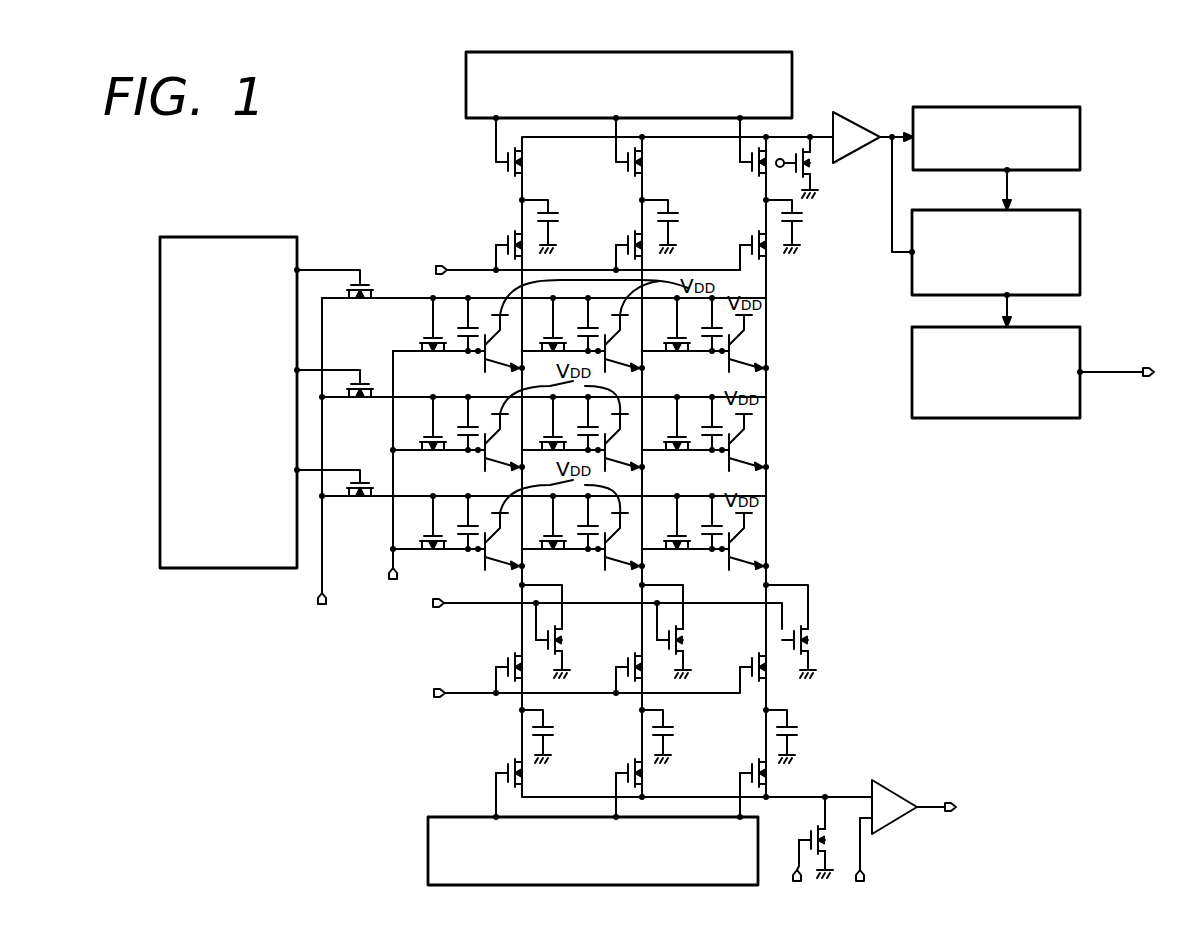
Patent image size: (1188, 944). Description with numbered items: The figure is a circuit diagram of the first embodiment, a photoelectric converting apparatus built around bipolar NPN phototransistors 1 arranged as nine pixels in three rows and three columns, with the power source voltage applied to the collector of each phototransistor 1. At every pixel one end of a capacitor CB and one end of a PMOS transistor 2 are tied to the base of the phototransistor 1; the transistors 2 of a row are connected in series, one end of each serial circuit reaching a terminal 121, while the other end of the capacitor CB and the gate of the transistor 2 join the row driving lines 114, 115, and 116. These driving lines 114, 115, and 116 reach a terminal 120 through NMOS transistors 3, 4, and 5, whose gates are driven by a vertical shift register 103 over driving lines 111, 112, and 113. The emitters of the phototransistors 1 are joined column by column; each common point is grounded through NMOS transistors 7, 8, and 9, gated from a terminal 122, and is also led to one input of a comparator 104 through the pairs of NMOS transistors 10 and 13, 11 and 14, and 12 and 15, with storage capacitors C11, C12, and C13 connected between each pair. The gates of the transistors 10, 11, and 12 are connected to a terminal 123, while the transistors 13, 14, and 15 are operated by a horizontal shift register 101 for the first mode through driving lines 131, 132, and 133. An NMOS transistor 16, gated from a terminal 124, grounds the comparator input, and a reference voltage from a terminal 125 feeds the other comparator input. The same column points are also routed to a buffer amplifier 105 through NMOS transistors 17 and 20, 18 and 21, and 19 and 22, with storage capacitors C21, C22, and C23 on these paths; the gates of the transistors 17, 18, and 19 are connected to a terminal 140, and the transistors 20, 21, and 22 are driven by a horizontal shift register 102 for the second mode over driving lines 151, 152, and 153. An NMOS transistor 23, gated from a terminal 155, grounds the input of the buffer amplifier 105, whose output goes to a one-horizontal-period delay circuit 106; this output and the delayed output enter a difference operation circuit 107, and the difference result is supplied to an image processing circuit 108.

The phototransistor 1 is at (768, 352).
The PMOS transistor 2 is at (428, 334).
The NMOS transistor 3 is at (363, 285).
The NMOS transistor 4 is at (366, 384).
The NMOS transistor 5 is at (364, 483).
The NMOS transistor 7 is at (560, 637).
The NMOS transistor 8 is at (683, 637).
The NMOS transistor 9 is at (806, 637).
The NMOS transistor 10 is at (506, 662).
The NMOS transistor 11 is at (627, 667).
The NMOS transistor 12 is at (750, 667).
The NMOS transistor 13 is at (506, 768).
The NMOS transistor 14 is at (628, 772).
The NMOS transistor 15 is at (748, 772).
The NMOS transistor 16 is at (812, 840).
The NMOS transistor 17 is at (508, 243).
The NMOS transistor 18 is at (628, 242).
The NMOS transistor 19 is at (752, 242).
The NMOS transistor 20 is at (508, 170).
The NMOS transistor 21 is at (628, 170).
The NMOS transistor 22 is at (752, 170).
The NMOS transistor 23 is at (794, 152).
The horizontal shift register 101 is at (428, 830).
The horizontal shift register 102 is at (466, 78).
The vertical shift register 103 is at (272, 237).
The comparator 104 is at (893, 792).
The buffer amplifier 105 is at (866, 115).
The 1H delay circuit 106 is at (1080, 158).
The difference operation circuit 107 is at (1080, 278).
The image processing circuit 108 is at (1080, 332).
The driving line 111 is at (333, 268).
The driving line 112 is at (344, 369).
The driving line 113 is at (348, 469).
The driving line 114 is at (403, 297).
The driving line 115 is at (403, 396).
The driving line 116 is at (403, 495).
The terminal 120 is at (320, 608).
The terminal 121 is at (393, 583).
The terminal 122 is at (437, 612).
The terminal 123 is at (427, 694).
The terminal 124 is at (799, 886).
The terminal 125 is at (868, 877).
The driving line 131 is at (494, 792).
The driving line 132 is at (615, 790).
The driving line 133 is at (739, 790).
The terminal 140 is at (440, 266).
The driving line 151 is at (497, 147).
The driving line 152 is at (615, 152).
The driving line 153 is at (741, 152).
The terminal 155 is at (780, 167).
The storage capacitor C11 is at (547, 722).
The storage capacitor C12 is at (667, 724).
The storage capacitor C13 is at (791, 724).
The storage capacitor C21 is at (552, 218).
The storage capacitor C22 is at (672, 218).
The storage capacitor C23 is at (796, 228).
The capacitor CB is at (468, 326).